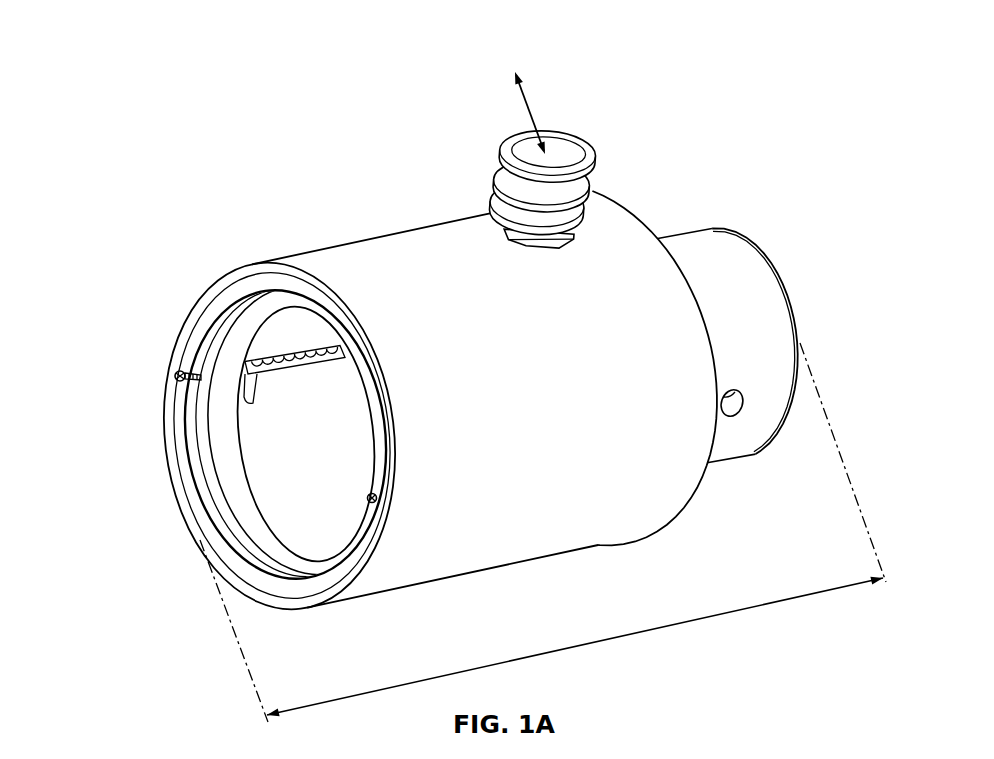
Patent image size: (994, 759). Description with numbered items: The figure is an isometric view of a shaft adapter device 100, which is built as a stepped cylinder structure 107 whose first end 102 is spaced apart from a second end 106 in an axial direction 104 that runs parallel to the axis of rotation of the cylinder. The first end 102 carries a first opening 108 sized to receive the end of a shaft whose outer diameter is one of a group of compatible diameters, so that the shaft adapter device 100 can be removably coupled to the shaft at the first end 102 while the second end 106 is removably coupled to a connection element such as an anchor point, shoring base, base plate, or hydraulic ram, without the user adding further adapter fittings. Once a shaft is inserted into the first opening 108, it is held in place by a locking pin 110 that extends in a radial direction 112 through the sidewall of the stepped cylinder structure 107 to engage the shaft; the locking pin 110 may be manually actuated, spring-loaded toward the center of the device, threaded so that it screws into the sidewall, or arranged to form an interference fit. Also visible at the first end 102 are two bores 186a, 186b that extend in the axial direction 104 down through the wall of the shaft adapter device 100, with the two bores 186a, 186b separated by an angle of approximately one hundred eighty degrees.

The shaft adapter device 100 is at (170, 127).
The first end 102 is at (147, 332).
The axial direction 104 is at (563, 648).
The second end 106 is at (771, 268).
The stepped cylinder structure 107 is at (400, 245).
The first opening 108 is at (300, 437).
The locking pin 110 is at (598, 187).
The radial direction 112 is at (531, 104).
The bore 186a is at (250, 374).
The bore 186b is at (368, 499).